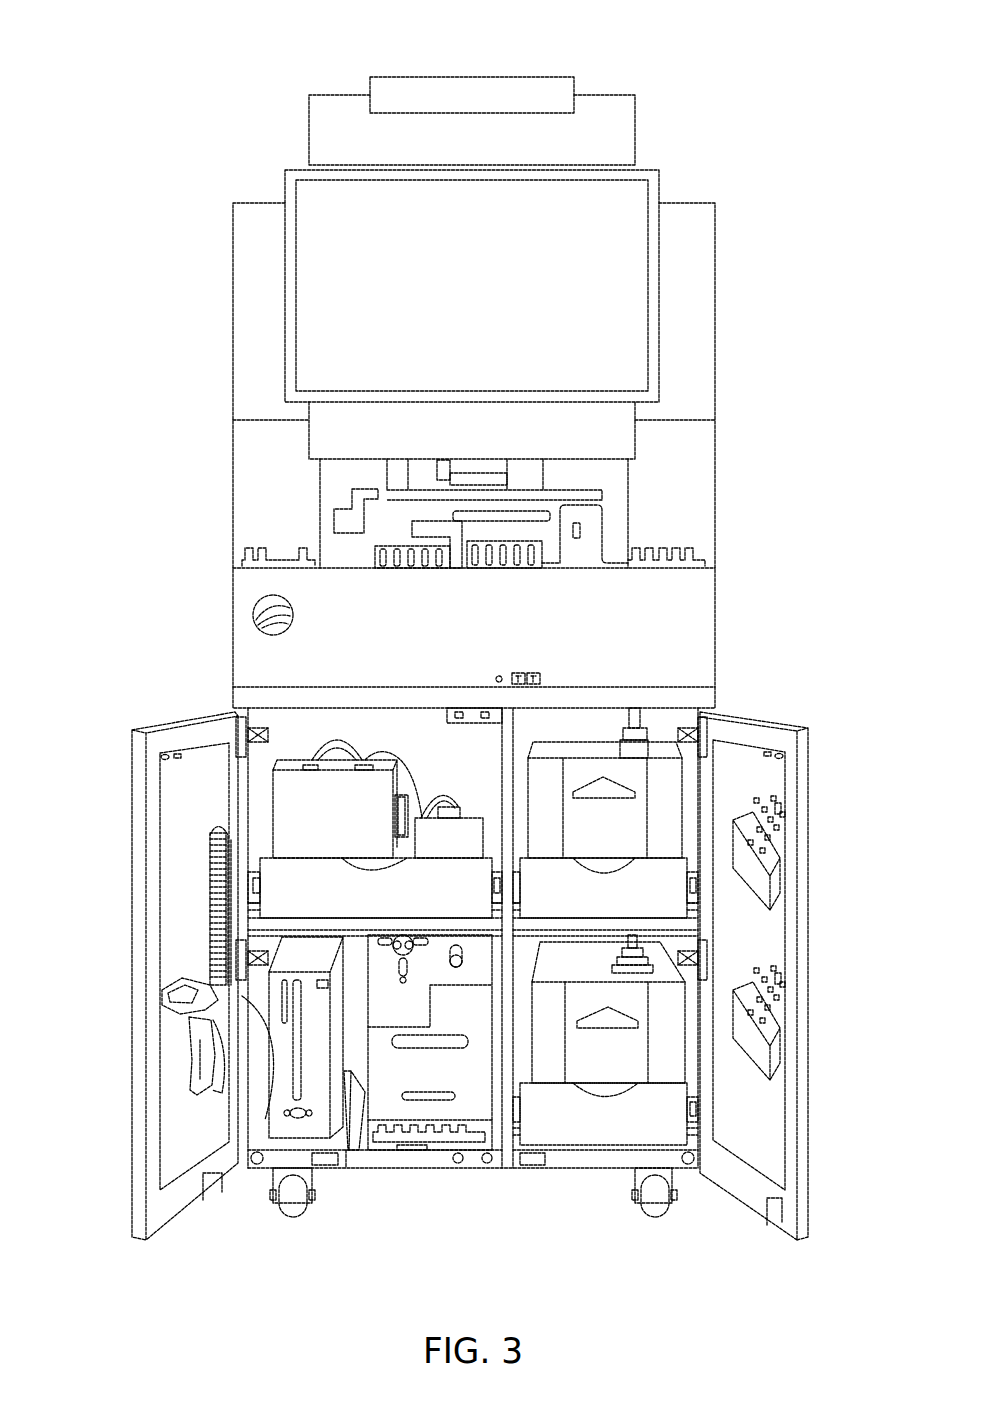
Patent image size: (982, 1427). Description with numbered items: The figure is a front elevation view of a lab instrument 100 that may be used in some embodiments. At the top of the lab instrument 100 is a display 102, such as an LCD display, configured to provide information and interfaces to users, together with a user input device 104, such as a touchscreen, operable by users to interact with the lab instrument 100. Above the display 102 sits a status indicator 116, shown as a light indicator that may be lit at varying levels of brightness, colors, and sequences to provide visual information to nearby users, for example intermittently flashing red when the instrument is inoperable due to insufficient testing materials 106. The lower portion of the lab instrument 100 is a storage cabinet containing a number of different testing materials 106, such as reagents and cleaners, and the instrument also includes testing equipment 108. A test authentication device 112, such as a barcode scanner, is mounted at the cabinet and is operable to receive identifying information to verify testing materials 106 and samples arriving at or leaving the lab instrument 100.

The lab instrument 100 is at (205, 58).
The display 102 is at (629, 197).
The user input device 104 is at (603, 297).
The testing materials 106 is at (313, 788).
The testing equipment 108 is at (577, 530).
The test authentication device 112 is at (198, 1055).
The status indicator 116 is at (451, 80).